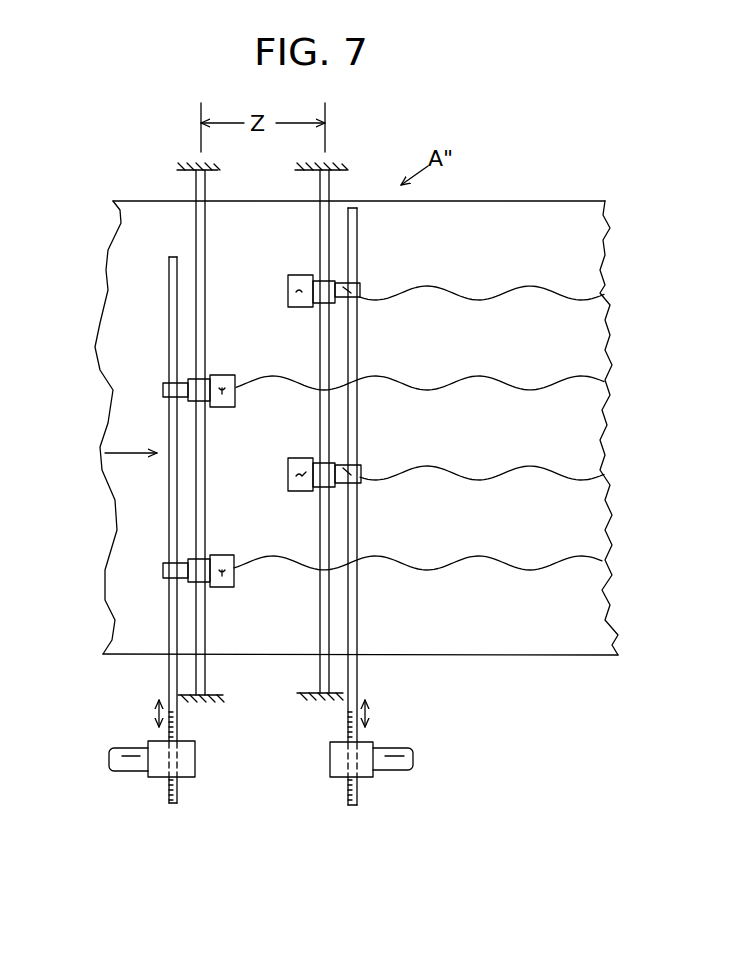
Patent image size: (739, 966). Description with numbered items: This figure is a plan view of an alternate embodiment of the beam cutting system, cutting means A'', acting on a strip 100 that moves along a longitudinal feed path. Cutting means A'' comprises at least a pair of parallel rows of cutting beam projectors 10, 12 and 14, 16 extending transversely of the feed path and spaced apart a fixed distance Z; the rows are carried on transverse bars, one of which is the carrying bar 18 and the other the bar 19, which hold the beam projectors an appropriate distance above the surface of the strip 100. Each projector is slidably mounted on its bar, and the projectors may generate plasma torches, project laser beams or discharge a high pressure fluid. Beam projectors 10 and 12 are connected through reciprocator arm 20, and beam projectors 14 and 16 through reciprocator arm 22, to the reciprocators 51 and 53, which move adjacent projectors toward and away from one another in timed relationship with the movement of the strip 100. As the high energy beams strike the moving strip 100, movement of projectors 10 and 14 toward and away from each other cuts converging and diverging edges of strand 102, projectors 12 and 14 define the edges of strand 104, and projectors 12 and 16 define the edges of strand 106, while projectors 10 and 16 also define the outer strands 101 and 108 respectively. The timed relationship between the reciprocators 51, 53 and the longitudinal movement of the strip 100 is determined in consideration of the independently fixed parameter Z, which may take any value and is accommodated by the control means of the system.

The strip 100 is at (120, 280).
The outer strand 101 is at (587, 240).
The strand 102 is at (593, 333).
The strand 104 is at (595, 426).
The strand 106 is at (598, 506).
The outer strand 108 is at (590, 596).
The cutting beam projector 10 is at (290, 292).
The cutting beam projector 12 is at (297, 462).
The cutting beam projector 14 is at (222, 381).
The cutting beam projector 16 is at (222, 556).
The carrying bar 18 is at (326, 191).
The fixed guide rod 19 is at (198, 190).
The reciprocator arm 20 is at (358, 446).
The reciprocator arm 22 is at (168, 510).
The reciprocator 51 is at (160, 768).
The reciprocator 53 is at (338, 768).